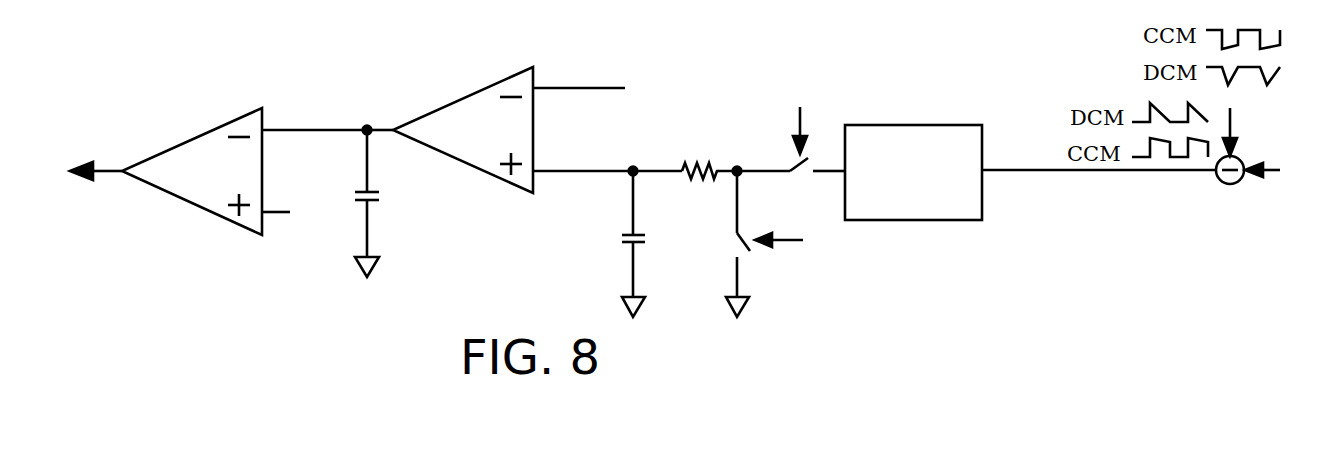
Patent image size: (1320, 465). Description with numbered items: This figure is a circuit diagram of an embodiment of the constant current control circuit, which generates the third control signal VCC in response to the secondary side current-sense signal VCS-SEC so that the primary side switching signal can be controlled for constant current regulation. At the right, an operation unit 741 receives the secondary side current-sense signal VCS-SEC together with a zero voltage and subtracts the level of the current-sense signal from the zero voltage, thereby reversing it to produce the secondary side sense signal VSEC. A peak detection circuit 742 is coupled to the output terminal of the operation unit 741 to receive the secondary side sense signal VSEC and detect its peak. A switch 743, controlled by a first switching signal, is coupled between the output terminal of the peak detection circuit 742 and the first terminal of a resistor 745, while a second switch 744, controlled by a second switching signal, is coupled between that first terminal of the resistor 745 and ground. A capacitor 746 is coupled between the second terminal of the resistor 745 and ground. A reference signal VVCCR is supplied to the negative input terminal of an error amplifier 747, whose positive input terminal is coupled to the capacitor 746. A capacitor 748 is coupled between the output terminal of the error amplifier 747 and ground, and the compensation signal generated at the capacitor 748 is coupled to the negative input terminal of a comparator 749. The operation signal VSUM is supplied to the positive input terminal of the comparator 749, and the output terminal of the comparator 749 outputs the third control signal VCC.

The operation unit 741 is at (1265, 166).
The peak detection circuit 742 is at (1030, 150).
The switch 743 is at (791, 143).
The switch 744 is at (764, 244).
The resistor 745 is at (706, 149).
The capacitor 746 is at (608, 244).
The error amplifier 747 is at (524, 123).
The capacitor 748 is at (395, 203).
The comparator 749 is at (193, 167).